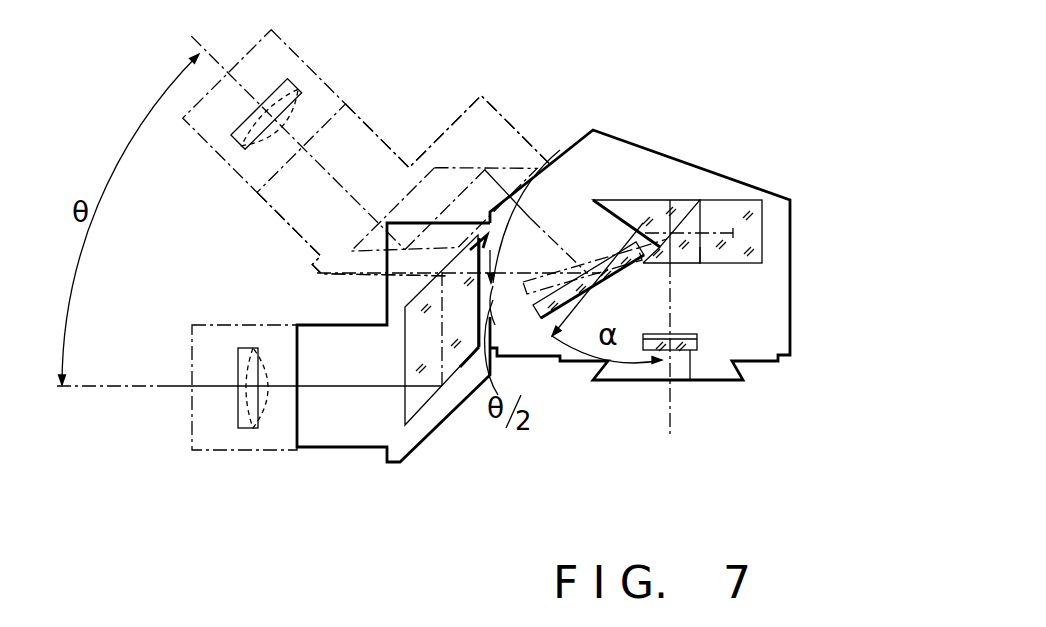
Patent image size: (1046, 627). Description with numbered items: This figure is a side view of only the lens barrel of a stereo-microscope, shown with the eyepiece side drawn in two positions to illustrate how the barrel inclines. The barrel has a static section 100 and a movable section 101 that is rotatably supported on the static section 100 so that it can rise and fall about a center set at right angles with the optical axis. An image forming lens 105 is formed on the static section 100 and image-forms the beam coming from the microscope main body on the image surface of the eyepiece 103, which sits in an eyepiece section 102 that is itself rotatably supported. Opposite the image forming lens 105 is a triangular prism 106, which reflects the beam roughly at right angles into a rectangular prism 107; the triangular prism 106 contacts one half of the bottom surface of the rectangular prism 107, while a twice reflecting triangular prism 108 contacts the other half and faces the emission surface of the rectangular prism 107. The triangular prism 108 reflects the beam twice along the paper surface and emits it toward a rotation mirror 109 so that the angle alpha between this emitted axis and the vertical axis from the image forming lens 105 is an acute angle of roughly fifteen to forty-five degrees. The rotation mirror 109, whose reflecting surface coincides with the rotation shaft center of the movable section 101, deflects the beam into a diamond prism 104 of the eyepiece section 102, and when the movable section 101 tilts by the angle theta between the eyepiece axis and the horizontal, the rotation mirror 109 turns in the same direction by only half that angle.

The static section 100 is at (763, 362).
The movable section 101 is at (528, 160).
The eyepiece section 102 is at (377, 157).
The eyepiece 103 is at (300, 90).
The diamond prism 104 is at (423, 397).
The image forming lens 105 is at (687, 350).
The triangular prism 106 is at (690, 245).
The rectangular prism 107 is at (757, 236).
The twice reflecting triangular prism 108 is at (680, 200).
The rotation mirror 109 is at (600, 247).